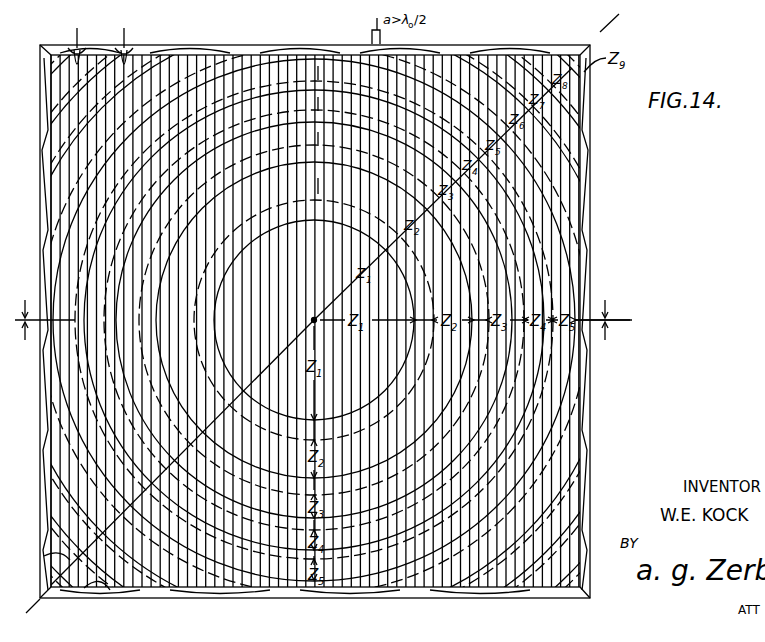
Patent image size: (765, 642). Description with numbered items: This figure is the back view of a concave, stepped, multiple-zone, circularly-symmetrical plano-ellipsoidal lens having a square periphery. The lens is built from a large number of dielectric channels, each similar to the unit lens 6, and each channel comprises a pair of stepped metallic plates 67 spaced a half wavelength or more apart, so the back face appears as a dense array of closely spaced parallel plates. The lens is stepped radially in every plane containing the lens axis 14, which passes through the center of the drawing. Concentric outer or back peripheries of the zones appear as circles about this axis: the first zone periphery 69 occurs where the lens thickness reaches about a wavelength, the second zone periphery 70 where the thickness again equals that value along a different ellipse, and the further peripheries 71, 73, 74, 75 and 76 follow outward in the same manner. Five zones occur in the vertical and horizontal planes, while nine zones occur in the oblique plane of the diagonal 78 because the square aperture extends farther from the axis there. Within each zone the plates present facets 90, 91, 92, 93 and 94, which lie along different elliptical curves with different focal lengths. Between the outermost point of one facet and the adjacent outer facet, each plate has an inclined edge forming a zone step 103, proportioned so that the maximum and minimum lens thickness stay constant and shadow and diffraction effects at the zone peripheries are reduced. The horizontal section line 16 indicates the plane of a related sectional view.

The unit lens 6 is at (124, 37).
The stepped metallic plates 67 is at (78, 37).
The lens axis 14 is at (310, 324).
The axis line 16 is at (323, 318).
The first zone periphery 69 is at (264, 392).
The second zone periphery 70 is at (276, 438).
The zone periphery 71 is at (252, 474).
The zone periphery 73 is at (172, 526).
The zone periphery 74 is at (116, 542).
The zone periphery 75 is at (88, 556).
The zone periphery 76 is at (95, 595).
The diagonal 78 is at (46, 556).
The facet of first zone 90 is at (302, 264).
The facet of second zone 91 is at (300, 188).
The facet of third zone 92 is at (302, 140).
The facet of fourth zone 93 is at (302, 106).
The facet of fifth zone 94 is at (302, 74).
The zone step 103 is at (337, 129).